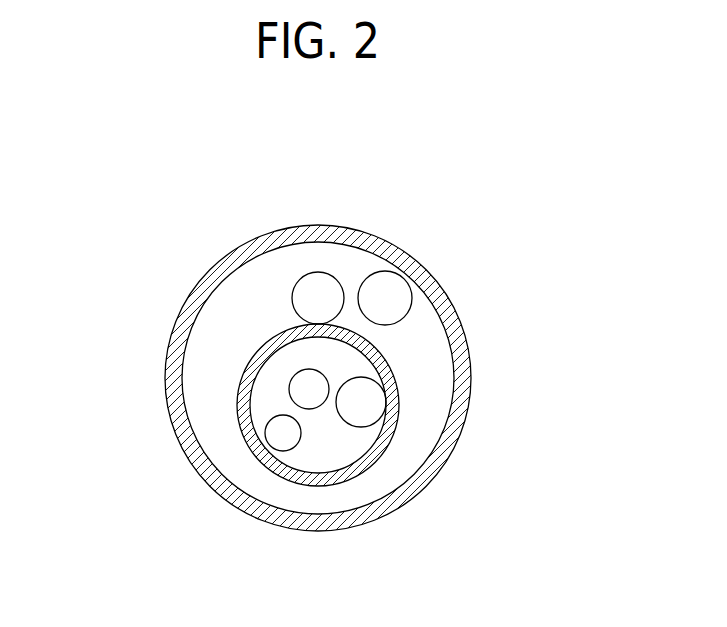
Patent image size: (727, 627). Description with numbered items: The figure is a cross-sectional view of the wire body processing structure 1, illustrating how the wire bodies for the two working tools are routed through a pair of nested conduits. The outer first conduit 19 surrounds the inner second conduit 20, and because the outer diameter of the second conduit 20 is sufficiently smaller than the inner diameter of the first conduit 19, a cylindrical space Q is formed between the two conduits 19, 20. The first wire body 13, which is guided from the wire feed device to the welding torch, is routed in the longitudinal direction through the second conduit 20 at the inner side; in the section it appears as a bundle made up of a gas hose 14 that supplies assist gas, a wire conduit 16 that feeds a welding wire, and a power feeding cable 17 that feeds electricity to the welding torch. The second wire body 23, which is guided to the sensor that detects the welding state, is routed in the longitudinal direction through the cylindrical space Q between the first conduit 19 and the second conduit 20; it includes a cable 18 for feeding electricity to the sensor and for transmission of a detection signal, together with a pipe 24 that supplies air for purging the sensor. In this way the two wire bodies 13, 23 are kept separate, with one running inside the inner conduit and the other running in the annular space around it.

The wire body processing structure 1 is at (70, 196).
The cylindrical space Q is at (250, 288).
The first wire body 13 is at (316, 458).
The gas hose 14 is at (373, 382).
The wire conduit 16 is at (265, 433).
The power feeding cable 17 is at (294, 375).
The cable 18 is at (318, 272).
The first conduit 19 is at (468, 413).
The second conduit 20 is at (237, 390).
The second wire body 23 is at (360, 258).
The pipe 24 is at (412, 298).